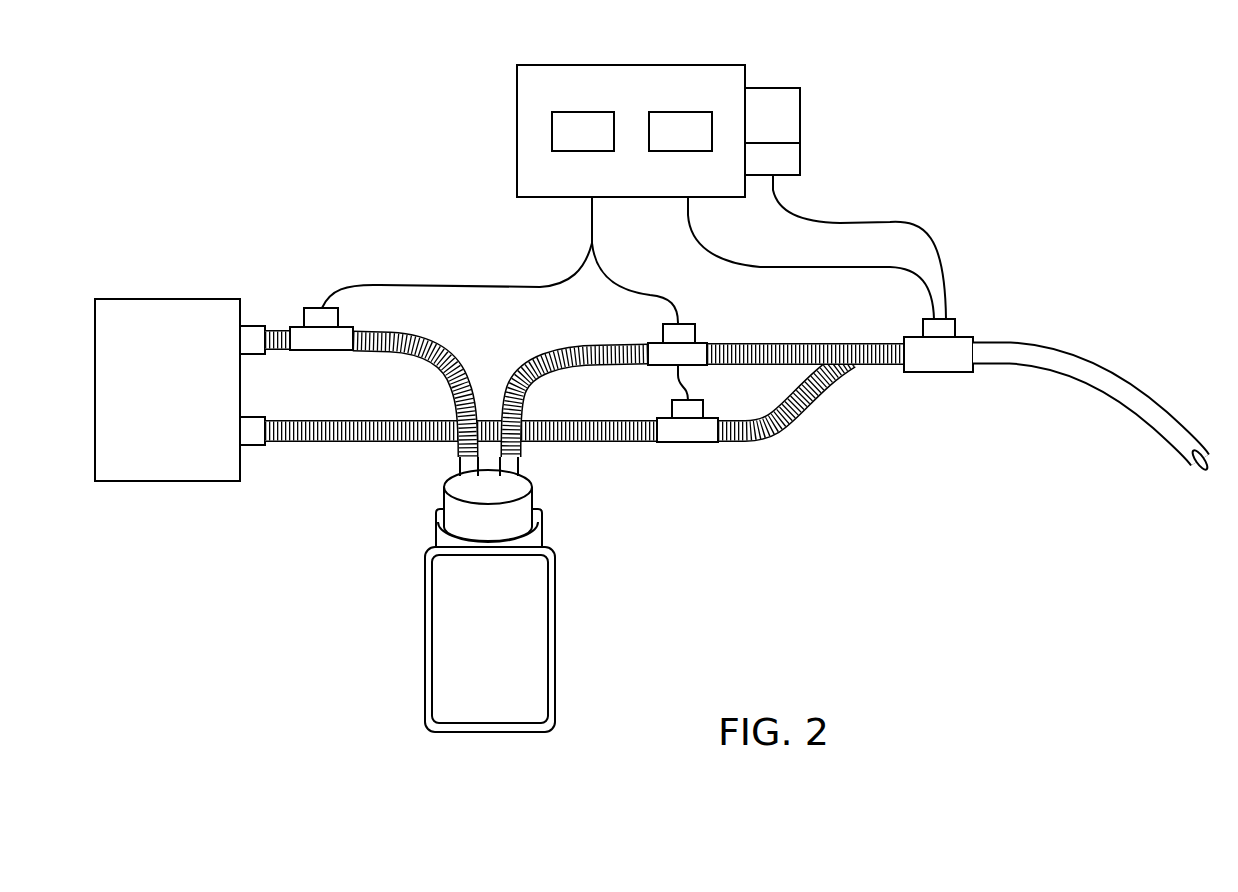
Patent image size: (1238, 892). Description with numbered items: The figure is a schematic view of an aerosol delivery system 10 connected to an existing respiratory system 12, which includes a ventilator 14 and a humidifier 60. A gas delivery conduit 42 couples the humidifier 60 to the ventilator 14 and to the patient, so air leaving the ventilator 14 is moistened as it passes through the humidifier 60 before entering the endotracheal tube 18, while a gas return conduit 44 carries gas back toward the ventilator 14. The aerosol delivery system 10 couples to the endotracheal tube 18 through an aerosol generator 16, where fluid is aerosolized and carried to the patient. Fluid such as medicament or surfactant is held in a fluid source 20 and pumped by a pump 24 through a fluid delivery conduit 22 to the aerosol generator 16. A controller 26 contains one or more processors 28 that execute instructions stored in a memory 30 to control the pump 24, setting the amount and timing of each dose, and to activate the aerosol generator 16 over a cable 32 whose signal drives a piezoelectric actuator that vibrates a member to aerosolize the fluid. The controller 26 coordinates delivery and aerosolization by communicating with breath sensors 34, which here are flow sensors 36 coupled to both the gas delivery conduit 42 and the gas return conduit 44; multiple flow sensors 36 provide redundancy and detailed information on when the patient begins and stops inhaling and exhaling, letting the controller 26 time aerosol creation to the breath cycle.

The aerosol delivery system 10 is at (566, 36).
The respiratory system 12 is at (202, 163).
The ventilator 14 is at (170, 300).
The aerosol generator 16 is at (953, 306).
The endotracheal tube 18 is at (1110, 393).
The fluid source 20 is at (800, 112).
The fluid delivery conduit 22 is at (880, 222).
The pump 24 is at (800, 160).
The controller 26 is at (517, 132).
The processor 28 is at (583, 151).
The memory 30 is at (680, 110).
The cable 32 is at (730, 252).
The breath sensors 34 is at (734, 622).
The flow sensor 36 is at (316, 340).
The gas delivery conduit 42 is at (420, 337).
The gas return conduit 44 is at (597, 441).
The humidifier 60 is at (556, 635).